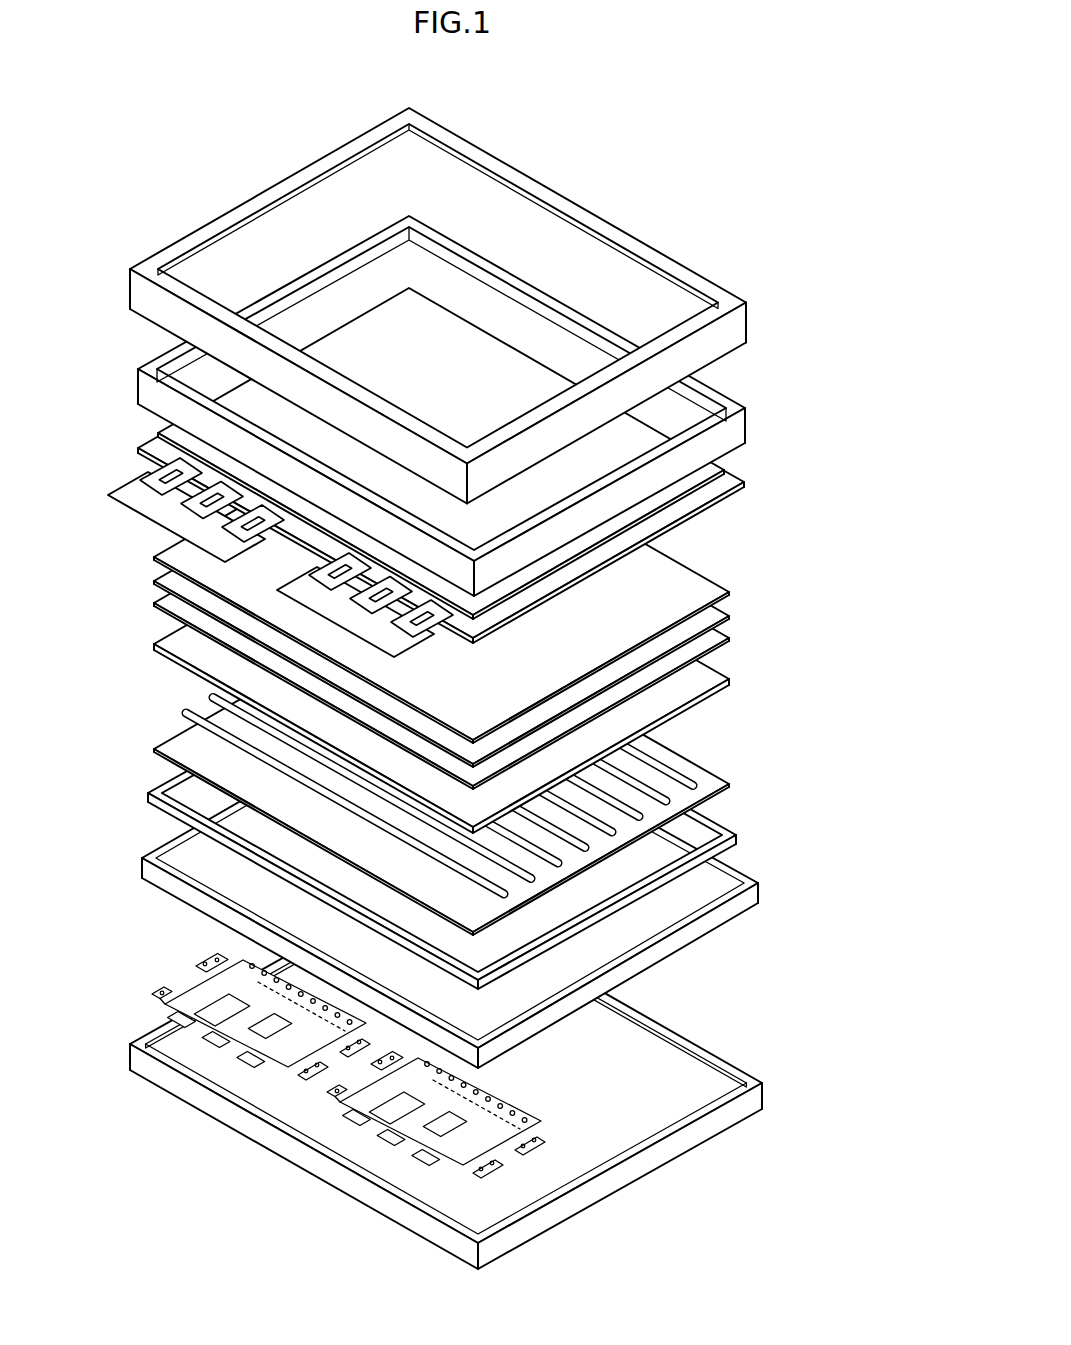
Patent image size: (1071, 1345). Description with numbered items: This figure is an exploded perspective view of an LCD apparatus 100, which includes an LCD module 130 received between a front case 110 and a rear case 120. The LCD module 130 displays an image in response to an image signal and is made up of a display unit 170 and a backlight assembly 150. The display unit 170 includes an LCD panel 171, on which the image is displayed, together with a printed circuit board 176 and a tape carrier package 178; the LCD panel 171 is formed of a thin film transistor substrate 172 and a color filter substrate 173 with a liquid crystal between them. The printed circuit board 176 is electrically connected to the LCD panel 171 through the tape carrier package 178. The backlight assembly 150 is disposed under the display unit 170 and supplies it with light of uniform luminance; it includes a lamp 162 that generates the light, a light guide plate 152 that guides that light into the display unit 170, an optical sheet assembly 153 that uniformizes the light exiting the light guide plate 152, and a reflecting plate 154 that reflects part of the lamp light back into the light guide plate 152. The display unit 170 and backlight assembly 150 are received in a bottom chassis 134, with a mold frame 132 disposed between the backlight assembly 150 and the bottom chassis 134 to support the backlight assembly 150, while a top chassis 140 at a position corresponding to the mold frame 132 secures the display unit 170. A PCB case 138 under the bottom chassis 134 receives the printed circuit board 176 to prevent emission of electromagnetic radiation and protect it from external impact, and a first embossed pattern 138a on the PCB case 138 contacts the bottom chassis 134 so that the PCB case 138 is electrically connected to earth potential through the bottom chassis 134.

The LCD apparatus 100 is at (461, 683).
The front case 110 is at (666, 247).
The rear case 120 is at (168, 1105).
The LCD module 130 is at (465, 839).
The mold frame 132 is at (148, 796).
The bottom chassis 134 is at (129, 868).
The PCB case 138 is at (296, 1040).
The first embossed pattern 138a is at (162, 990).
The top chassis 140 is at (148, 354).
The backlight assembly 150 is at (410, 651).
The light guide plate 152 is at (702, 680).
The optical sheet assembly 153 is at (100, 712).
The reflecting plate 154 is at (706, 783).
The lamp 162 is at (184, 713).
The display unit 170 is at (441, 472).
The LCD panel 171 is at (490, 465).
The thin film transistor substrate 172 is at (740, 483).
The color filter substrate 173 is at (722, 466).
The printed circuit board 176 is at (112, 497).
The tape carrier package 178 is at (172, 458).